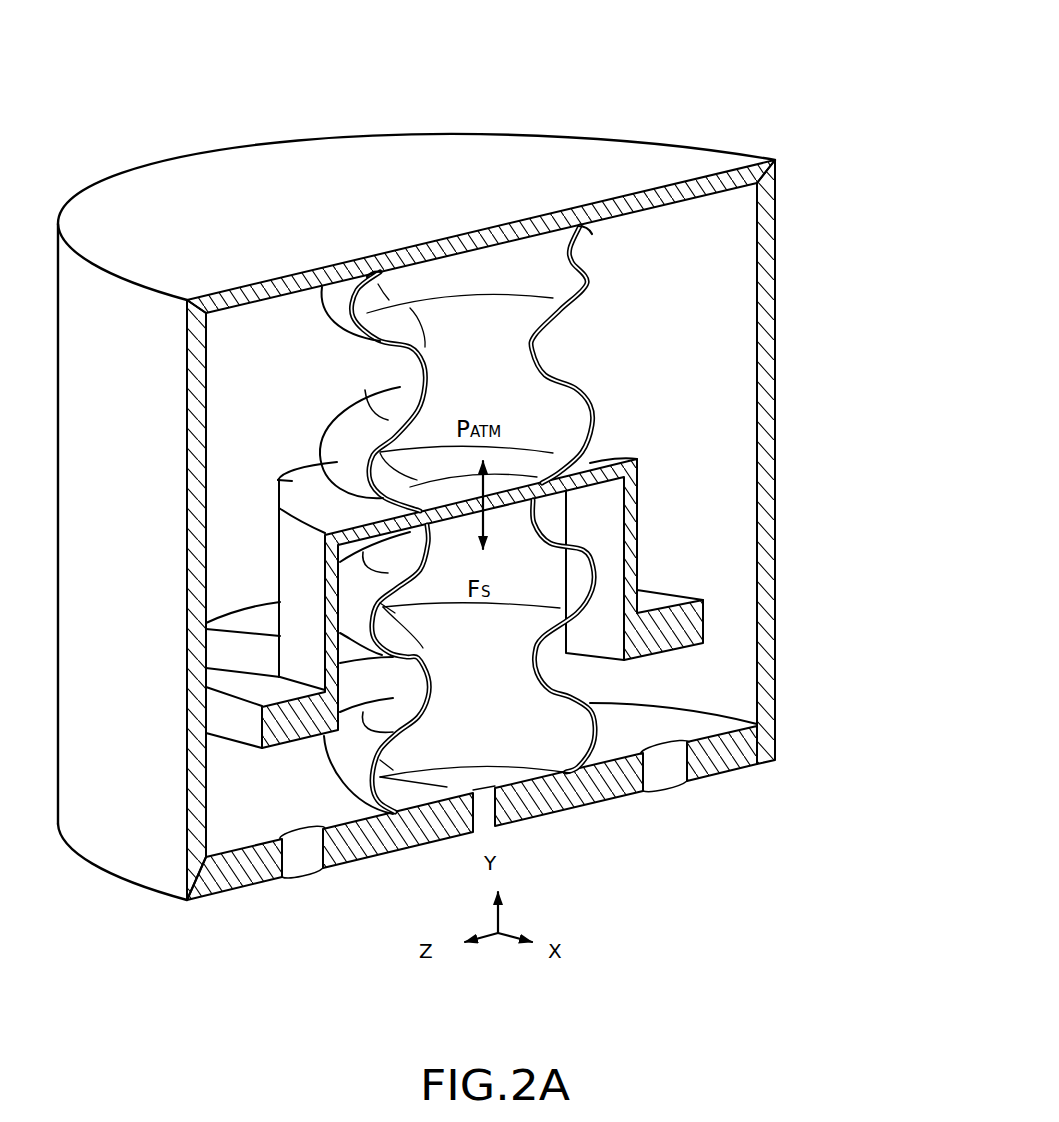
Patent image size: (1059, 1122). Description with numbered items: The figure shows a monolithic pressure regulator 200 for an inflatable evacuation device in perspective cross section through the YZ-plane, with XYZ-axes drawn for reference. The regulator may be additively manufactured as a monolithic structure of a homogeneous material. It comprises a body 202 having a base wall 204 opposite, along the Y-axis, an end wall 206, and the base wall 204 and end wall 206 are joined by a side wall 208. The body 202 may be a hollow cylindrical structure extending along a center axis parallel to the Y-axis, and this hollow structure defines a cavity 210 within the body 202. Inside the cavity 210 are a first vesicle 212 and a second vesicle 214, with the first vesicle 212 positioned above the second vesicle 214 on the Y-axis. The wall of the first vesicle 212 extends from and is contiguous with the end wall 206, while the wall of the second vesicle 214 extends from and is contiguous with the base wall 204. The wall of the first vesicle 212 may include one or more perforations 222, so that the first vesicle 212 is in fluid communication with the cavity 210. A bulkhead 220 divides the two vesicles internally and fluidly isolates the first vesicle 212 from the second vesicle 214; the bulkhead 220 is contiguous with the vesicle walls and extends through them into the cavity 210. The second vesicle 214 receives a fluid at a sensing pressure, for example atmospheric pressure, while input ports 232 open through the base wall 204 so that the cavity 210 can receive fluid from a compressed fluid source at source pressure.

The monolithic pressure regulator 200 is at (714, 80).
The body 202 is at (527, 511).
The base wall 204 is at (617, 792).
The end wall 206 is at (463, 158).
The side wall 208 is at (769, 473).
The cavity 210 is at (668, 364).
The first vesicle 212 is at (480, 321).
The second vesicle 214 is at (482, 626).
The bulkhead 220 is at (597, 458).
The perforations 222 is at (578, 268).
The input ports 232 is at (307, 857).